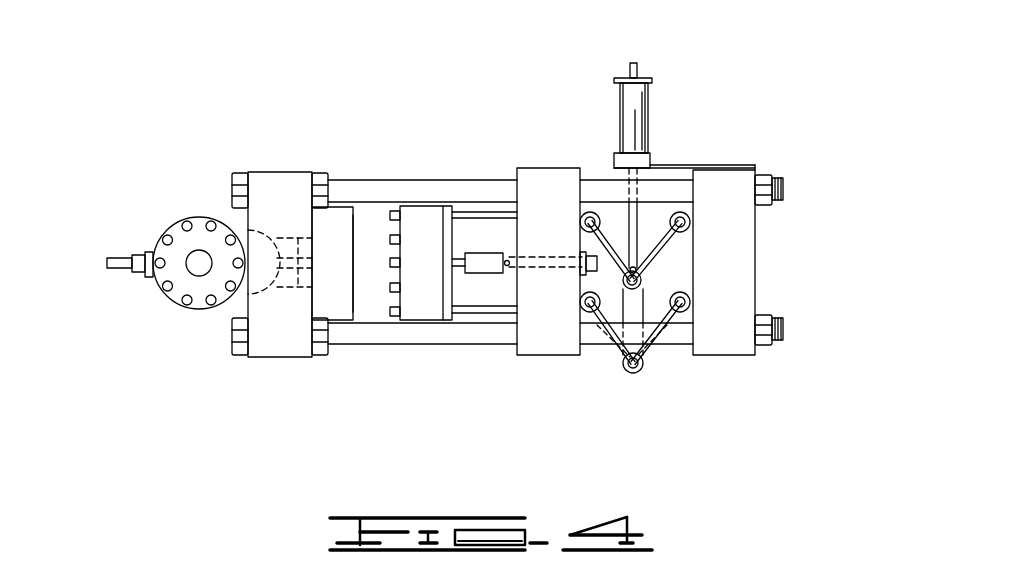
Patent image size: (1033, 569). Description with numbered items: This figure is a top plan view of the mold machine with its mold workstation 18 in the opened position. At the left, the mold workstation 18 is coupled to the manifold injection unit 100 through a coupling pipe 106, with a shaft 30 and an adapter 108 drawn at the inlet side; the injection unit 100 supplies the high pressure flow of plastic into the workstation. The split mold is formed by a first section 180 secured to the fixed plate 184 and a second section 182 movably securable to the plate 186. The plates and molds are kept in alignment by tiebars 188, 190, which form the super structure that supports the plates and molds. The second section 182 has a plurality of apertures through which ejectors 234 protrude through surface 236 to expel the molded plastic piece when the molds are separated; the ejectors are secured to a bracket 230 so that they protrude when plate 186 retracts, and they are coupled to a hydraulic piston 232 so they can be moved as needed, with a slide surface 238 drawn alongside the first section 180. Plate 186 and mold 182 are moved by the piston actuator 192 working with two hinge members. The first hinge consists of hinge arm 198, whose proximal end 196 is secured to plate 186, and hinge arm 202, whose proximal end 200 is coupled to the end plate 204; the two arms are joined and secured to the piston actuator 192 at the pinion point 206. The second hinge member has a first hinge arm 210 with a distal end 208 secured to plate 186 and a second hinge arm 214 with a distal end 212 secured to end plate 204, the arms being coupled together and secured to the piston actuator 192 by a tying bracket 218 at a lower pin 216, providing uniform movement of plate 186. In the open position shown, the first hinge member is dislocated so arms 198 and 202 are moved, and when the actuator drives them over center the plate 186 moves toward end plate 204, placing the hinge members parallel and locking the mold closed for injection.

The mold workstation 18 is at (773, 367).
The drive shaft 30 is at (118, 258).
The manifold injection unit 100 is at (173, 223).
The hidden coupling bore 106 is at (262, 277).
The shaft adapter 108 is at (145, 277).
The first section 180 is at (342, 205).
The second section 182 is at (417, 215).
The fixed plate 184 is at (265, 170).
The plate 186 is at (535, 182).
The tiebar 188 is at (472, 344).
The tiebar 190 is at (450, 180).
The piston actuator 192 is at (648, 73).
The proximal end 196 is at (593, 207).
The hinge arm 198 is at (610, 237).
The proximal end 200 is at (688, 200).
The hinge arm 202 is at (667, 247).
The end plate 204 is at (737, 188).
The pinion point 206 is at (642, 278).
The distal end 208 is at (588, 347).
The first hinge arm 210 is at (613, 355).
The distal end 212 is at (687, 300).
The second hinge arm 214 is at (652, 360).
The lower pivot pin 216 is at (633, 373).
The tying bracket 218 is at (667, 347).
The bracket 230 is at (443, 315).
The hydraulic piston 232 is at (510, 260).
The ejectors 234 is at (392, 313).
The surface 236 is at (400, 277).
The slide surface 238 is at (363, 227).